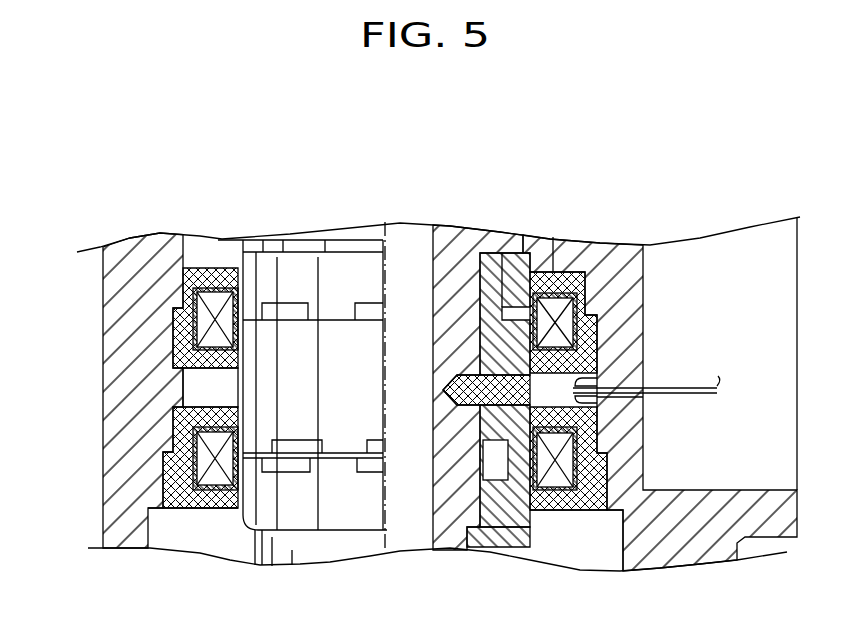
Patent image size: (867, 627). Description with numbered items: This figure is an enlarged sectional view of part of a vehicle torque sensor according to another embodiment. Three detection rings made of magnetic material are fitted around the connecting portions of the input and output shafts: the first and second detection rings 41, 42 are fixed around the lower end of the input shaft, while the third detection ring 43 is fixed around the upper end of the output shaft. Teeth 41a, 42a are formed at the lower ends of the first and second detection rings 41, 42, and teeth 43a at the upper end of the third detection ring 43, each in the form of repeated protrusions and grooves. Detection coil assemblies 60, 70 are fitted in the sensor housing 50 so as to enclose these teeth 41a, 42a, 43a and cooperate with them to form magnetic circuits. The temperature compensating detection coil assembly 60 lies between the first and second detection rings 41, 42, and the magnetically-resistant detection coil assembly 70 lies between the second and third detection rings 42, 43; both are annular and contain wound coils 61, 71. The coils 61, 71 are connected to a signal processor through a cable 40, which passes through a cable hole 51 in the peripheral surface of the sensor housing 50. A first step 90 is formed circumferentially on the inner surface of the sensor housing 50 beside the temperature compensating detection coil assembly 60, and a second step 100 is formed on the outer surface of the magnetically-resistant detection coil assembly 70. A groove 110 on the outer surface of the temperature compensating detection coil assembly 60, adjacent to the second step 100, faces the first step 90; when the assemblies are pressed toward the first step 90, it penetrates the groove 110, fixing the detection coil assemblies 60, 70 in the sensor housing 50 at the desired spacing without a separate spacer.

The cable 40 is at (718, 388).
The first detection ring 41 is at (263, 263).
The teeth 41a is at (337, 305).
The second detection ring 42 is at (250, 383).
The teeth 42a is at (350, 447).
The third detection ring 43 is at (250, 493).
The teeth 43a is at (343, 461).
The sensor housing 50 is at (163, 240).
The cable hole 51 is at (640, 398).
The temperature compensating detection coil assembly 60 is at (190, 280).
The coil 61 is at (200, 325).
The magnetically-resistant detection coil assembly 70 is at (195, 410).
The coil 71 is at (168, 456).
The first step 90 is at (597, 306).
The second step 100 is at (597, 328).
The groove 110 is at (577, 272).